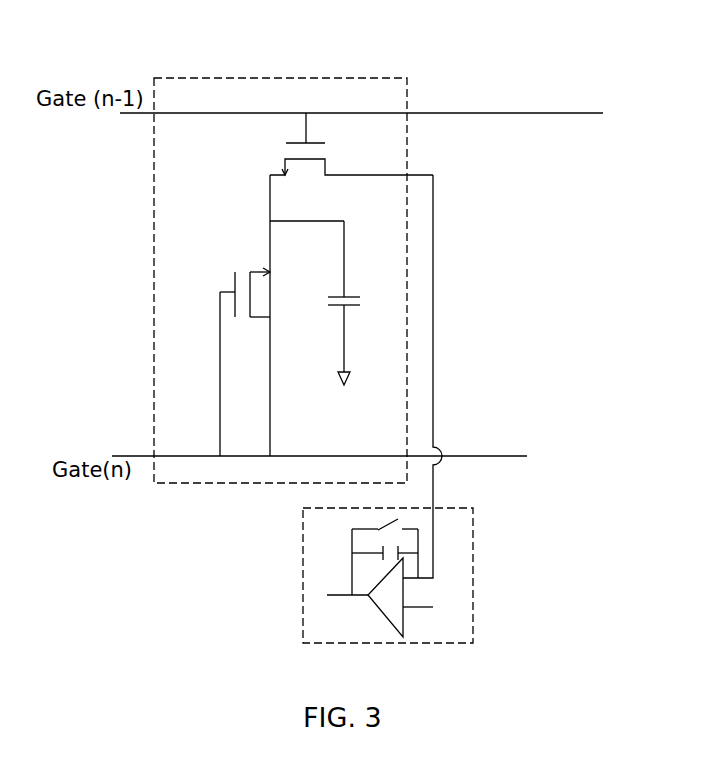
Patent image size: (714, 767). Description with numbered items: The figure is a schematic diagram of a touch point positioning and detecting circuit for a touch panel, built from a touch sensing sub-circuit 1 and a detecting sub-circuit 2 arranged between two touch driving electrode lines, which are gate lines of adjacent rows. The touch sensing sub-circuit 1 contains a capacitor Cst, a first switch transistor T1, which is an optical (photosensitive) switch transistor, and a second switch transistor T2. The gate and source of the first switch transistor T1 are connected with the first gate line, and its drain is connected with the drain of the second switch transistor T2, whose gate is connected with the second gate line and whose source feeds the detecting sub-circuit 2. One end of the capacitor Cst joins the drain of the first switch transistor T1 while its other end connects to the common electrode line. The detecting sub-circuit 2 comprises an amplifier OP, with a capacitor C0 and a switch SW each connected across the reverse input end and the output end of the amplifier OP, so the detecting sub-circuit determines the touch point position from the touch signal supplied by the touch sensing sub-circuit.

The touch sensing sub-circuit 1 is at (312, 78).
The detecting sub-circuit 2 is at (473, 565).
The first switch transistor T1 is at (213, 353).
The second switch transistor T2 is at (351, 144).
The capacitor Cst is at (363, 296).
The switch SW is at (385, 520).
The capacitor C0 is at (385, 547).
The amplifier OP is at (380, 597).